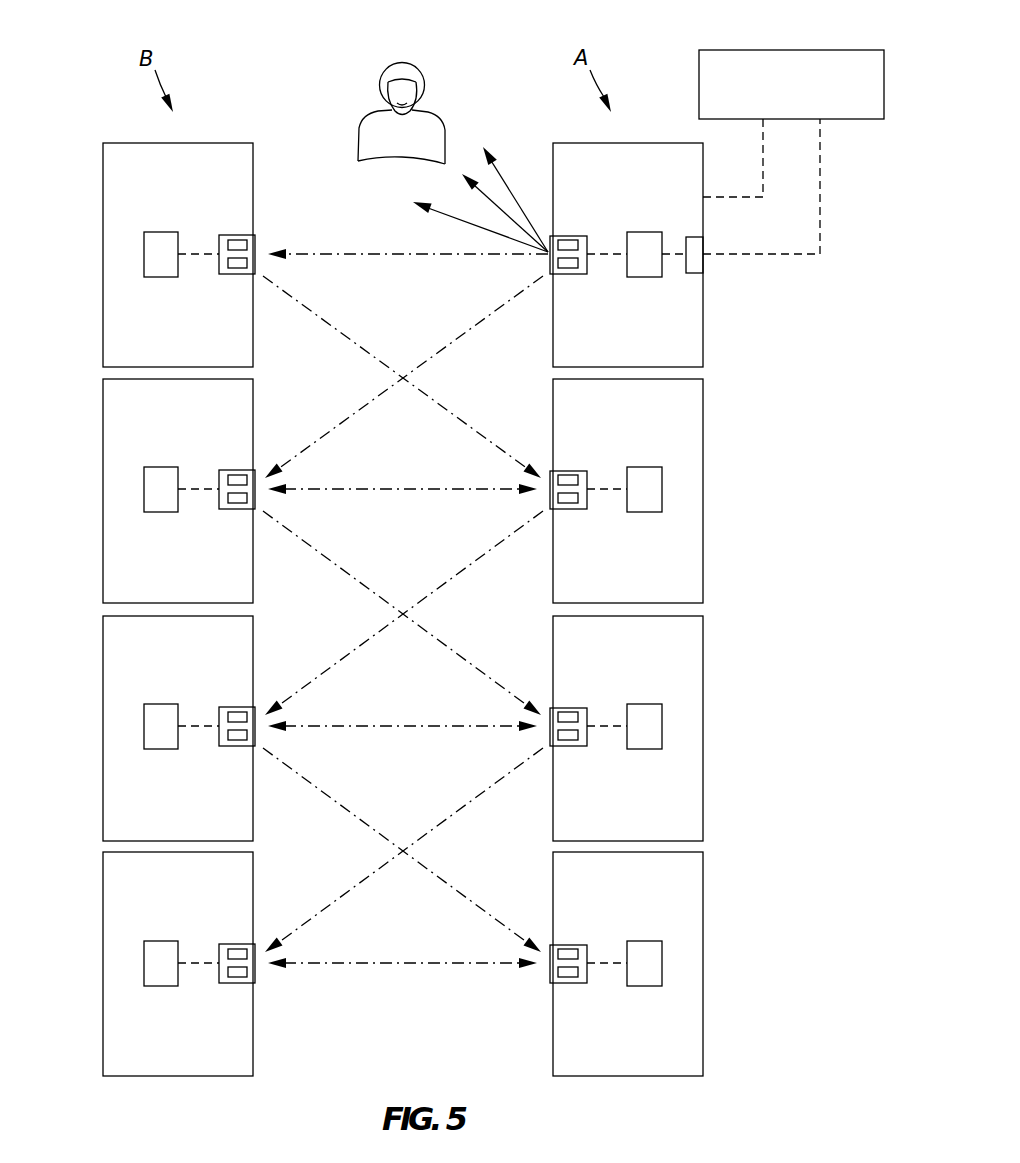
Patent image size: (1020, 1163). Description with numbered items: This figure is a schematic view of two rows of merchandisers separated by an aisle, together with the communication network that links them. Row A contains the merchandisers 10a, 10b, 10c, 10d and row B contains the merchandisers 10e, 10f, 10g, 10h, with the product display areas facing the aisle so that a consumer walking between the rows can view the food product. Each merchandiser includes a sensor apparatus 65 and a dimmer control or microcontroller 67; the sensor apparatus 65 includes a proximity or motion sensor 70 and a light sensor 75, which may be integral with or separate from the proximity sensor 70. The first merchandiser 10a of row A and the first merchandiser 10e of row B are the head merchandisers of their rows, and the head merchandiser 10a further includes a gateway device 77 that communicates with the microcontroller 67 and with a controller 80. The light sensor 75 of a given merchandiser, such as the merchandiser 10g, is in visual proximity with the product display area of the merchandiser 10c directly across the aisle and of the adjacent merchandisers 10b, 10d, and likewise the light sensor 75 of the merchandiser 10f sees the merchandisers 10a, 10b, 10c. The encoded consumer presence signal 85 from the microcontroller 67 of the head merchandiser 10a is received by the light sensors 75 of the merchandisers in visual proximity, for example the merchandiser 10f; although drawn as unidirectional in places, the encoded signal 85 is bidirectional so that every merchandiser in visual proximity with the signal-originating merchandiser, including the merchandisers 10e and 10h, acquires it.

The first merchandiser in row A 10a is at (640, 143).
The second merchandiser in row A 10b is at (703, 447).
The third merchandiser in row A 10c is at (703, 682).
The fourth merchandiser in row A 10d is at (703, 917).
The first merchandiser in row B 10e is at (103, 222).
The second merchandiser in row B 10f is at (103, 457).
The third merchandiser in row B 10g is at (103, 692).
The fourth merchandiser in row B 10h is at (103, 927).
The sensor apparatus 65 is at (405, 633).
The microcontroller 67 is at (407, 580).
The proximity sensor 70 is at (402, 569).
The light sensor 75 is at (403, 653).
The gateway device 77 is at (692, 274).
The controller 80 is at (762, 50).
The encoded consumer presence signal 85 is at (405, 588).